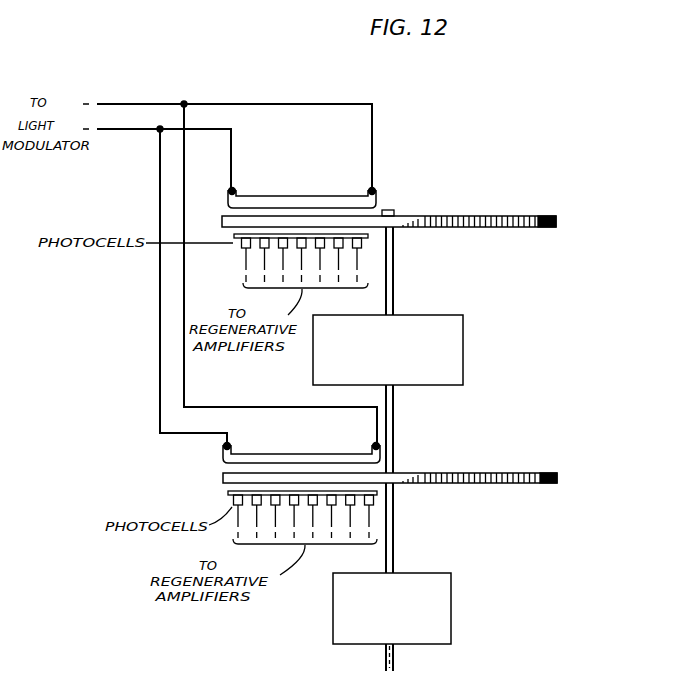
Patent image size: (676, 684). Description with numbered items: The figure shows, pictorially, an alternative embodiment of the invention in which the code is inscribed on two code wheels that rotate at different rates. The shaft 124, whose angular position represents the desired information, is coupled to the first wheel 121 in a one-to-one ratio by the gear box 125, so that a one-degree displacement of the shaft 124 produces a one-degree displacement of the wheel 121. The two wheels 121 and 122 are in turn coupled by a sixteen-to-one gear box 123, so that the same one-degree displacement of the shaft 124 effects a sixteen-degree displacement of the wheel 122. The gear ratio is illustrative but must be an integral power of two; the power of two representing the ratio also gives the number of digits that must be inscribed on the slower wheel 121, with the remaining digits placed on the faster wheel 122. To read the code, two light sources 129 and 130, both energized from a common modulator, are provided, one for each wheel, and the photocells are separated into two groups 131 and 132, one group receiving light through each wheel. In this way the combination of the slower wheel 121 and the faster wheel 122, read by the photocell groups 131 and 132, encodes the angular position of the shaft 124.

The code wheel 121 is at (487, 473).
The code wheel 122 is at (556, 218).
The 16:1 gear box 123 is at (463, 352).
The shaft 124 is at (397, 661).
The gear box 125 is at (451, 608).
The light source 129 is at (278, 201).
The light source 130 is at (313, 456).
The photocell group 131 is at (240, 254).
The photocell group 132 is at (228, 502).